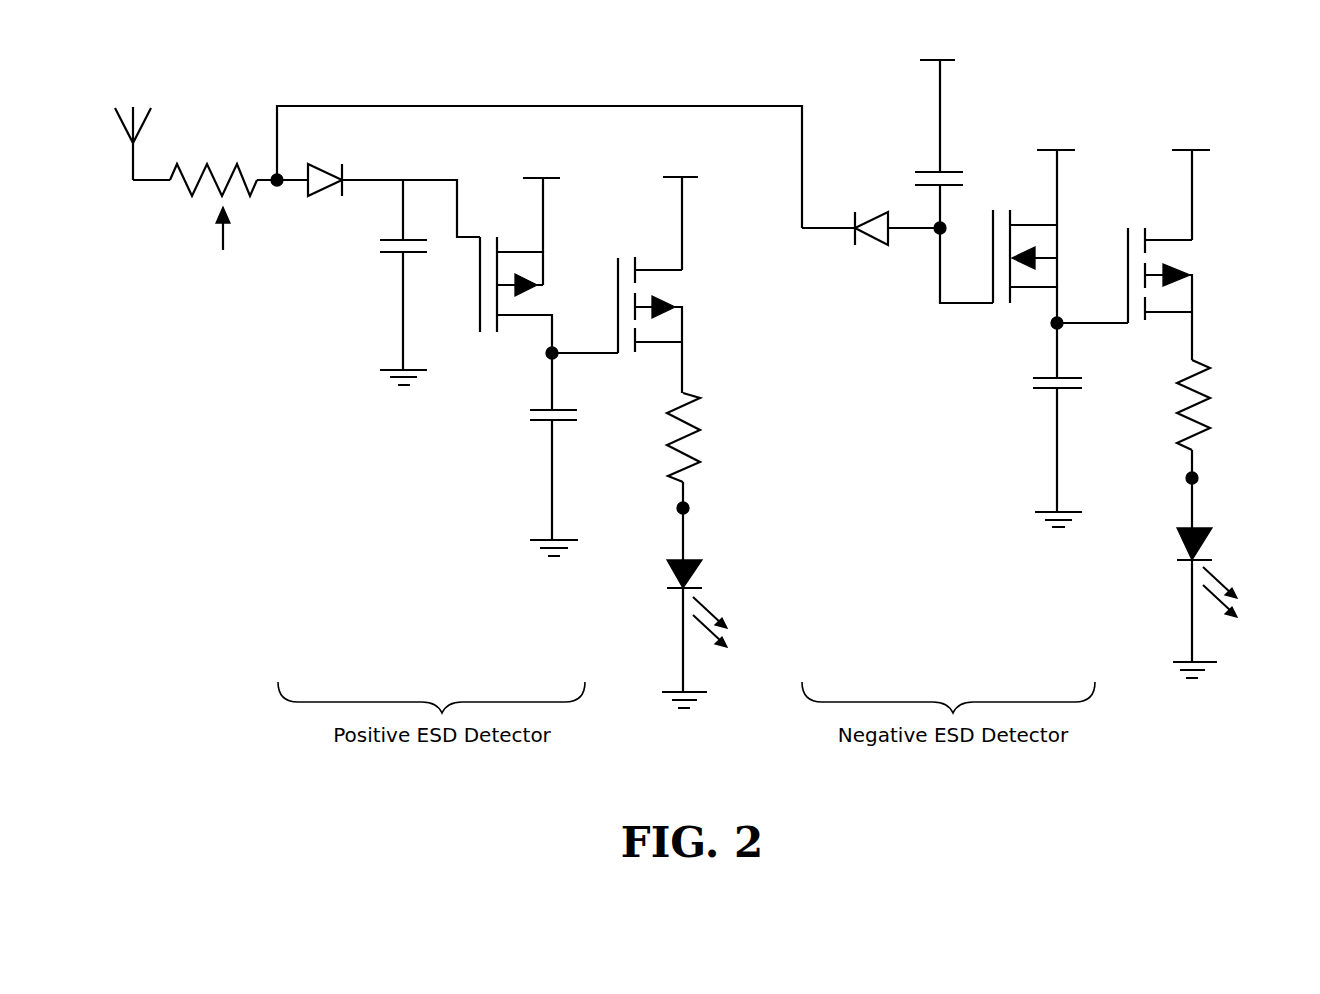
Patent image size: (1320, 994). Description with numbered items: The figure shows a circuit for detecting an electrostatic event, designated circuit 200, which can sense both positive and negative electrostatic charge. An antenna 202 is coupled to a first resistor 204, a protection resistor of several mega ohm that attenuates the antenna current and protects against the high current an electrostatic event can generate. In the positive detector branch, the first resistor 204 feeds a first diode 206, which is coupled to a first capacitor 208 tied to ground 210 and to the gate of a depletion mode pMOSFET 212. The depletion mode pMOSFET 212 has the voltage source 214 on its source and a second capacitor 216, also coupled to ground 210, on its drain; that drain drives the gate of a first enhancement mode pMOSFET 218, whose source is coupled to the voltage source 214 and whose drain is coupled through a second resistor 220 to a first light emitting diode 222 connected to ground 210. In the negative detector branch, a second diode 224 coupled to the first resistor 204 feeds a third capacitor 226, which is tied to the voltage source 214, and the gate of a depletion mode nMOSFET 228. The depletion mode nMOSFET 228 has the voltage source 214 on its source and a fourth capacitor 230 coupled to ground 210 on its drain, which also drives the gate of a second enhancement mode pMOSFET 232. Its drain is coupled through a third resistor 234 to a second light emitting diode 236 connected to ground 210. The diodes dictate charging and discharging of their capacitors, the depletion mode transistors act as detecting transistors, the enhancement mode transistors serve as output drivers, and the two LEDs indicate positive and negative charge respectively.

The circuit for detecting an electrostatic event 200 is at (314, 81).
The antenna 202 is at (128, 155).
The first resistor 204 is at (184, 190).
The first diode 206 is at (322, 197).
The first capacitor 208 is at (399, 256).
The ground 210 is at (397, 370).
The depletion mode pMOSFET 212 is at (480, 316).
The voltage source 214 is at (681, 213).
The second capacitor 216 is at (540, 423).
The first enhancement mode pMOSFET 218 is at (617, 270).
The second resistor 220 is at (688, 400).
The first light emitting diode 222 is at (695, 562).
The second diode 224 is at (872, 243).
The third capacitor 226 is at (931, 169).
The depletion mode nMOSFET 228 is at (1012, 293).
The fourth capacitor 230 is at (1048, 393).
The second enhancement mode pMOSFET 232 is at (1127, 253).
The third resistor 234 is at (1190, 426).
The second light emitting diode 236 is at (1181, 531).